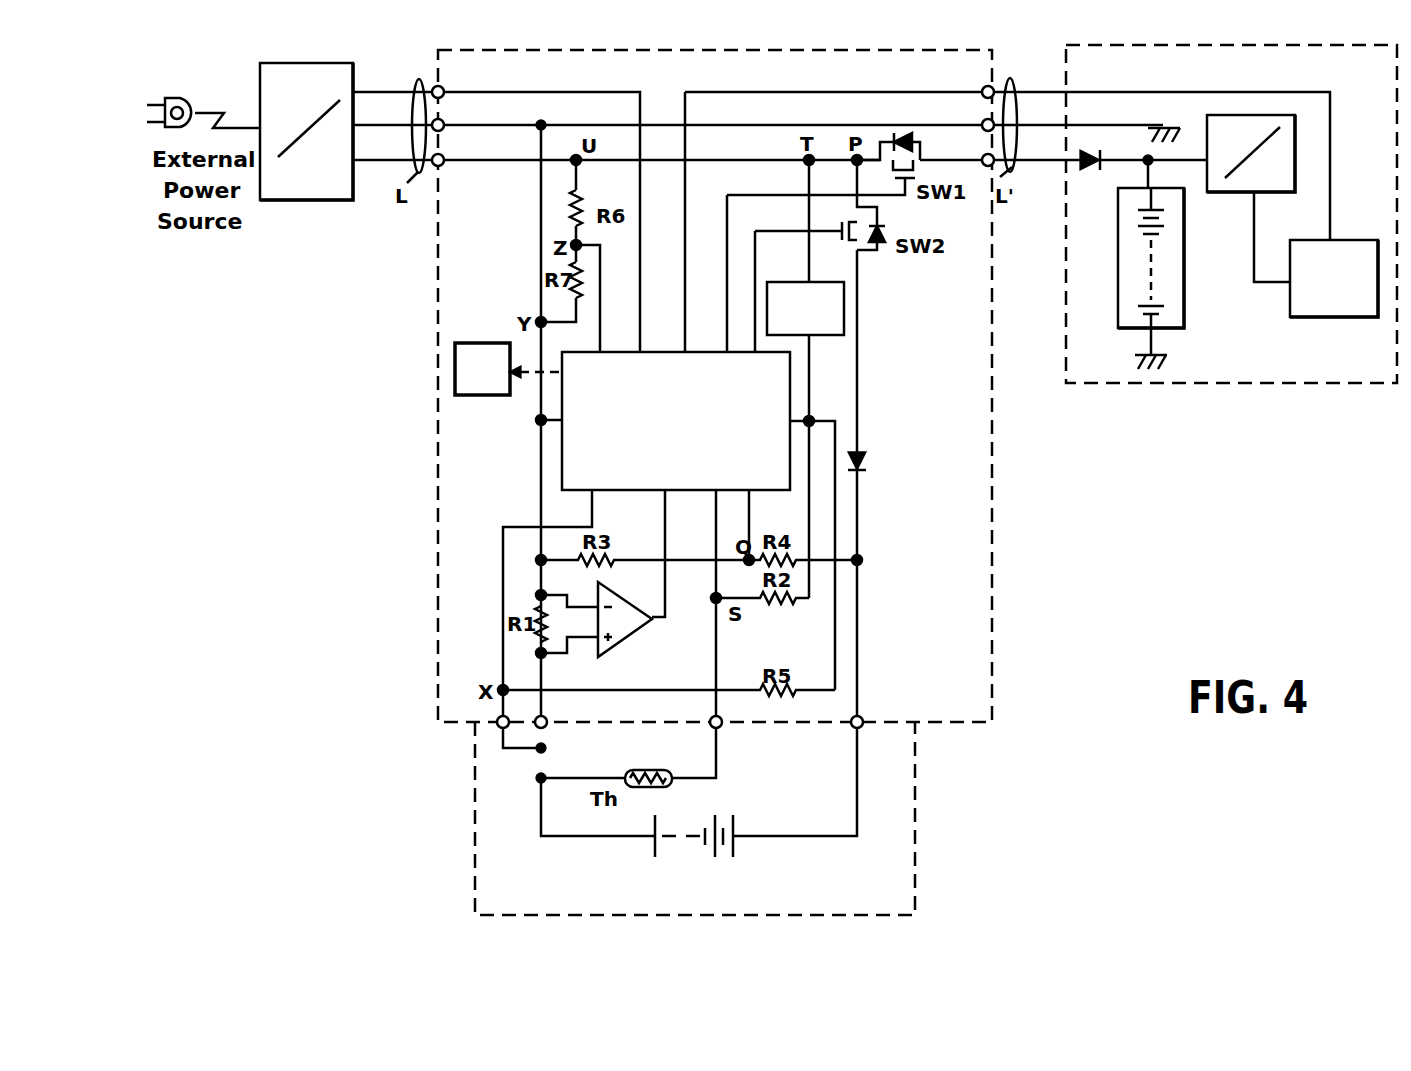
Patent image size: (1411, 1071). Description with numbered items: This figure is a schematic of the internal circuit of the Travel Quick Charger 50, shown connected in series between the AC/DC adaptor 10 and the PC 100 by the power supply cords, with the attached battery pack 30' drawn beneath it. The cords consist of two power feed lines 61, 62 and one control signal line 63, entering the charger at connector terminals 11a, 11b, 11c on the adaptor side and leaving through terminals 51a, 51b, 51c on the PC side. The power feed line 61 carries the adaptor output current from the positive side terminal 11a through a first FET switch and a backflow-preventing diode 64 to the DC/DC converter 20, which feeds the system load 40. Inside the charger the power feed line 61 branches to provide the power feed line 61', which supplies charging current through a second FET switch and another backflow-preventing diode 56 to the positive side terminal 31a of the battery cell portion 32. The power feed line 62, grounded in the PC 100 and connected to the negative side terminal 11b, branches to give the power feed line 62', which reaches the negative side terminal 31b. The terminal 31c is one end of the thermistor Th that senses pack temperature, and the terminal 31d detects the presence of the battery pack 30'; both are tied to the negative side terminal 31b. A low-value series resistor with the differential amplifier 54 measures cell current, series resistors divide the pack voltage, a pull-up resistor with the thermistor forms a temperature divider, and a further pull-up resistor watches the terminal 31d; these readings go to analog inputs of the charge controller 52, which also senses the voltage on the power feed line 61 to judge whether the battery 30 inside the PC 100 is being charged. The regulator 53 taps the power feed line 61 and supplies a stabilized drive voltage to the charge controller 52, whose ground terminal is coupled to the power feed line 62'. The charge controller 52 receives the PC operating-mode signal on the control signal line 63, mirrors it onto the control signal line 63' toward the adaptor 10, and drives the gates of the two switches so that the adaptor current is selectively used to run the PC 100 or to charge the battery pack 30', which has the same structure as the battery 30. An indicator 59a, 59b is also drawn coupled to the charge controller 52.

The AC/DC adaptor 10 is at (333, 203).
The positive side terminal 11a is at (710, 160).
The negative side terminal 11b is at (710, 125).
The connector terminal 11c is at (536, 216).
The DC/DC converter 20 is at (1233, 194).
The battery 30 is at (1177, 264).
The battery pack 30' is at (752, 818).
The positive side terminal 31a is at (840, 737).
The negative side terminal 31b is at (567, 749).
The terminal 31c is at (739, 737).
The terminal 31d is at (513, 747).
The battery cell portion 32 is at (694, 865).
The system load 40 is at (1360, 240).
The Travel Quick Charger 50 is at (996, 562).
The charger terminal 51a is at (964, 150).
The charger terminal 51b is at (964, 115).
The charger terminal 51c is at (839, 208).
The charge controller 52 is at (562, 484).
The regulator 53 is at (823, 281).
The differential amplifier 54 is at (642, 627).
The diode 56 is at (866, 466).
The LED 59a is at (480, 343).
The LED 59b is at (509, 340).
The power feed line 61 is at (780, 146).
The power feed line 61' is at (882, 486).
The power feed line 62 is at (766, 120).
The power feed line 62' is at (521, 421).
The control signal line 63 is at (1159, 151).
The control signal line 63' is at (392, 79).
The diode 64 is at (1087, 167).
The PC 100 is at (1252, 387).